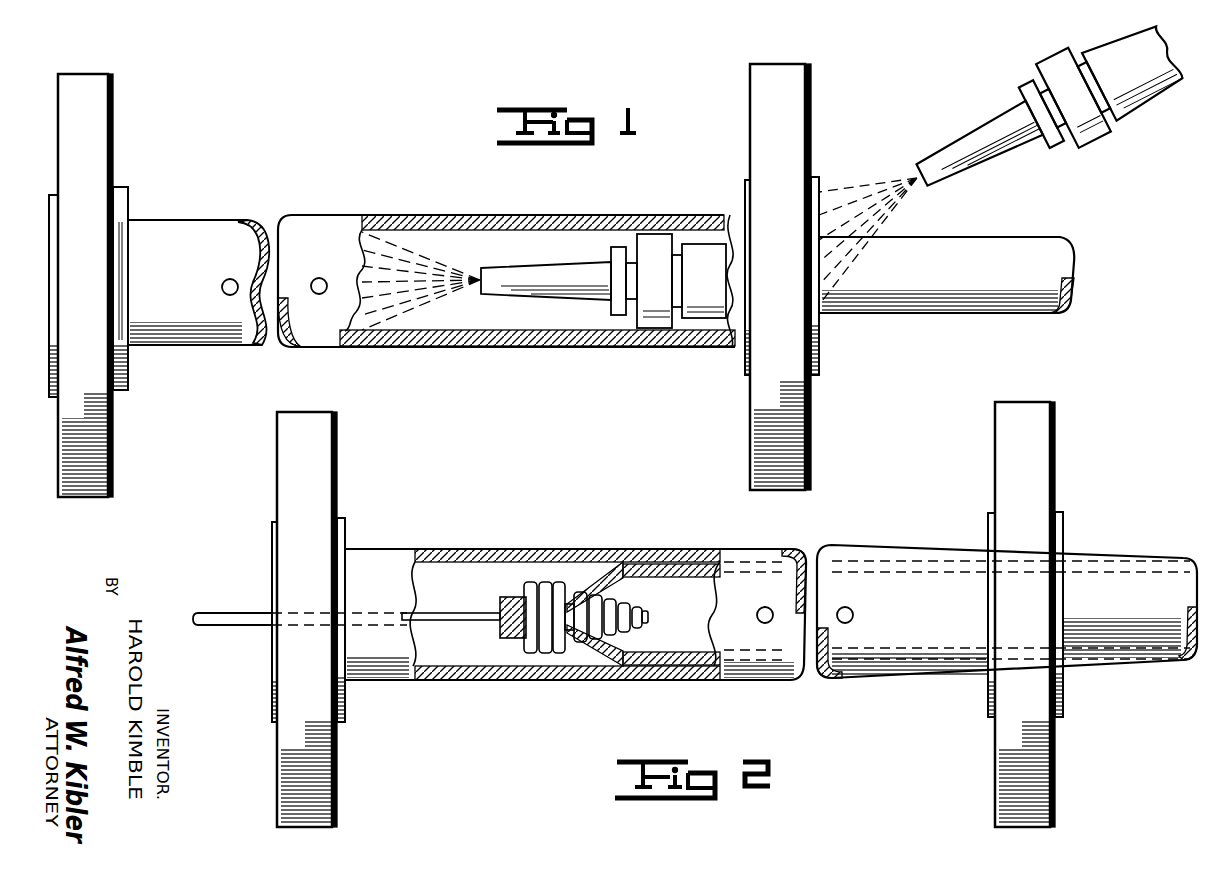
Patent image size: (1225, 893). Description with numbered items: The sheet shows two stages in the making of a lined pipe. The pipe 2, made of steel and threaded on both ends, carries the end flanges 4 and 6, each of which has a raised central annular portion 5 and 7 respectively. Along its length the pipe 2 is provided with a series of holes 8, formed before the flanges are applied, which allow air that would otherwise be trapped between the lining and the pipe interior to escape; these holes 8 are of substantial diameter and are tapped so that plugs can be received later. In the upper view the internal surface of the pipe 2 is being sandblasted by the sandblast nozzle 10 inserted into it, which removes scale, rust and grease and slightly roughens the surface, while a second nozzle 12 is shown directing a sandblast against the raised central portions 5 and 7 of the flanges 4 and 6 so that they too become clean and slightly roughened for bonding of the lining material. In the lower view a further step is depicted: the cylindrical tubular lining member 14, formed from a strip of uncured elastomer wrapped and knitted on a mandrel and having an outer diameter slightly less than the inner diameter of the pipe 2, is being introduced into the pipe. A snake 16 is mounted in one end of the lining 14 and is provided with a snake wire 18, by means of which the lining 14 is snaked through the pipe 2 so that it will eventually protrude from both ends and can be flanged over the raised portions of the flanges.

In FIG. 1, the pipe 2 is at (200, 220).
In FIG. 2, the pipe 2 is at (600, 549).
In FIG. 1, the end flange 4 is at (812, 130).
In FIG. 2, the end flange 4 is at (1045, 480).
In FIG. 1, the raised central annular portion 5 is at (821, 368).
In FIG. 2, the raised central annular portion 5 is at (1063, 530).
In FIG. 1, the end flange 6 is at (113, 142).
In FIG. 2, the end flange 6 is at (337, 452).
In FIG. 1, the raised central annular portion 7 is at (52, 397).
In FIG. 2, the raised central annular portion 7 is at (272, 558).
In FIG. 1, the holes 8 is at (222, 289).
In FIG. 2, the holes 8 is at (758, 610).
In FIG. 1, the sandblast nozzle 10 is at (590, 302).
In FIG. 1, the nozzle 12 is at (1000, 148).
In FIG. 2, the tubular lining member 14 is at (640, 682).
In FIG. 2, the snake 16 is at (590, 662).
In FIG. 2, the snake wire 18 is at (246, 628).